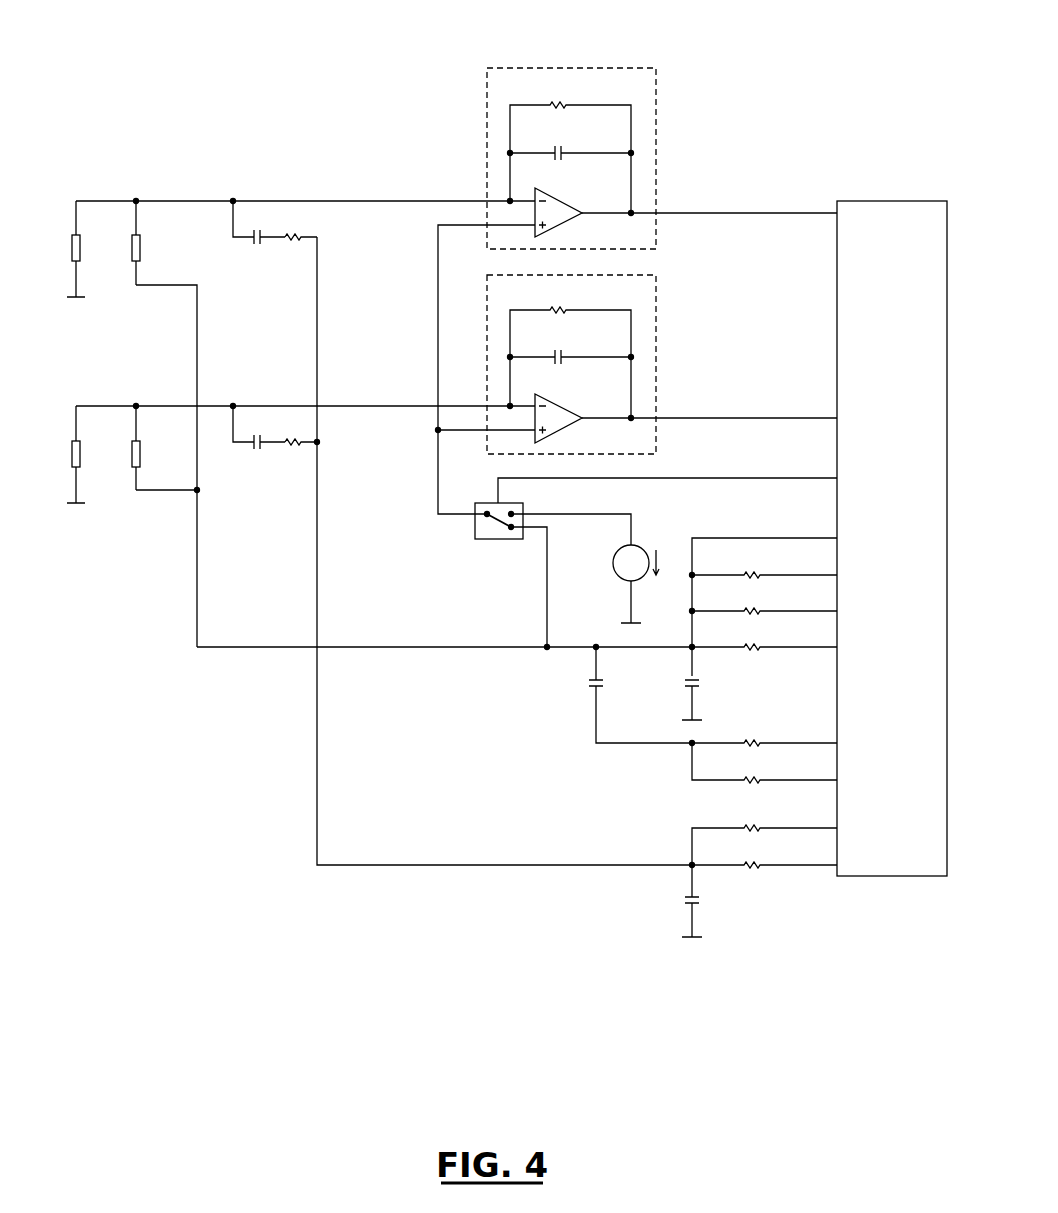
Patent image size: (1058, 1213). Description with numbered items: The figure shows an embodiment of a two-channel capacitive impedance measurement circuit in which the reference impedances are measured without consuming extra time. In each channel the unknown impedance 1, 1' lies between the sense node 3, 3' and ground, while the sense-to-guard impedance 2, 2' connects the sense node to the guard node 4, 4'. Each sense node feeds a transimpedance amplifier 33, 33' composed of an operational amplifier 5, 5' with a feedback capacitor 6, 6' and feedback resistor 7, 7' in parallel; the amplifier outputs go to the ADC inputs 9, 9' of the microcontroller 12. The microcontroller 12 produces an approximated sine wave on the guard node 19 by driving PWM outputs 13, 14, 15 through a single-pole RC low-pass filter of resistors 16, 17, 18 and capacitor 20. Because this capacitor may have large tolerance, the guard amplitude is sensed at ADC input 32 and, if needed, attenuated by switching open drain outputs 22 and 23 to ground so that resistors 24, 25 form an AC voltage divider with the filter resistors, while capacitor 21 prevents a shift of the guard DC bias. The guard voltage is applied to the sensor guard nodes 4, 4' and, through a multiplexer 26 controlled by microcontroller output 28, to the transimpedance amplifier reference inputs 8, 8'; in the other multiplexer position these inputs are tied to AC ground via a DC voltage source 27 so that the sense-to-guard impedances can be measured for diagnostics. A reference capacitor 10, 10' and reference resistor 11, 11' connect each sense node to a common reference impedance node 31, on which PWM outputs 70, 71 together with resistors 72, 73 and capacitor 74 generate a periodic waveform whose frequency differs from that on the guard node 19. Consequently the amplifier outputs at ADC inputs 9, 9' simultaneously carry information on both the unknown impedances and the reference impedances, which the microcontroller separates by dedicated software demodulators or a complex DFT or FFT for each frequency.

The unknown impedance 1 is at (68, 249).
The sense-to-guard impedance 2 is at (126, 243).
The sense node 3 is at (305, 192).
The guard node 4 is at (166, 456).
The operational amplifier 5 is at (584, 207).
The feedback impedance 6 is at (571, 139).
The feedback impedance 7 is at (570, 146).
The transimpedance amplifier reference input 8 is at (486, 369).
The ADC input 9 is at (734, 203).
The reference impedance 10 is at (259, 222).
The reference impedance 11 is at (301, 222).
The microcontroller 12 is at (892, 528).
The PWM output 13 is at (813, 563).
The PWM output 14 is at (813, 599).
The PWM output 15 is at (813, 635).
The resistor 16 is at (741, 565).
The resistor 17 is at (741, 601).
The resistor 18 is at (741, 637).
The guard node 19 is at (446, 588).
The capacitor 20 is at (680, 696).
The capacitor 21 is at (628, 696).
The open drain output 22 is at (813, 732).
The open drain output 23 is at (813, 769).
The resistor 24 is at (741, 734).
The resistor 25 is at (741, 763).
The multiplexer 26 is at (495, 511).
The DC voltage source 27 is at (585, 568).
The microcontroller output 28 is at (667, 481).
The node 31 is at (504, 551).
The ADC input 32 is at (764, 598).
The transimpedance amplifier 33 is at (571, 149).
The PWM output 70 is at (813, 817).
The PWM output 71 is at (813, 854).
The resistor 72 is at (741, 835).
The resistor 73 is at (740, 855).
The capacitor 74 is at (679, 901).
The unknown impedance 1' is at (66, 454).
The sense-to-guard impedance 2' is at (125, 448).
The sense node 3' is at (305, 397).
The guard node 4' is at (168, 482).
The operational amplifier 5' is at (584, 412).
The feedback impedance 6' is at (571, 344).
The feedback impedance 7' is at (570, 351).
The transimpedance amplifier reference input 8' is at (486, 441).
The ADC input 9' is at (734, 408).
The reference impedance 10' is at (259, 427).
The reference impedance 11' is at (302, 428).
The transimpedance amplifier 33' is at (571, 354).